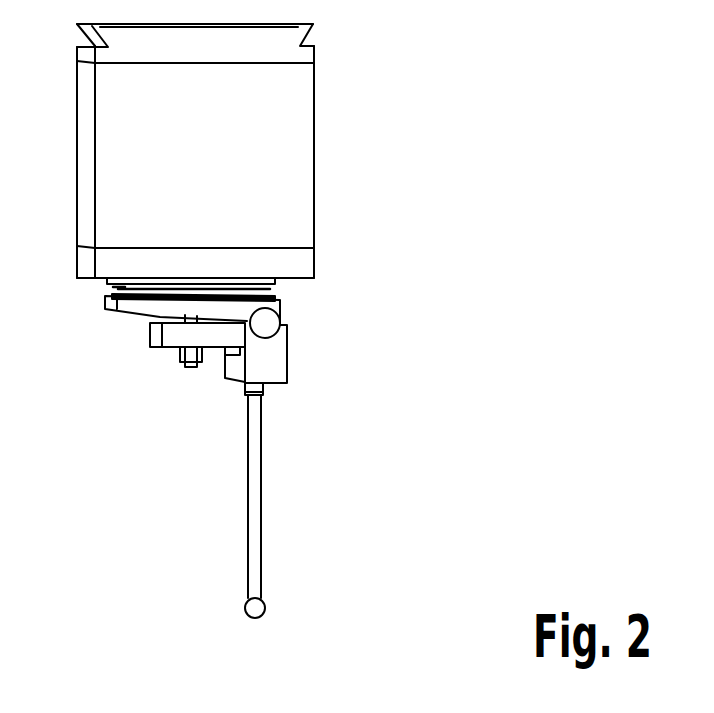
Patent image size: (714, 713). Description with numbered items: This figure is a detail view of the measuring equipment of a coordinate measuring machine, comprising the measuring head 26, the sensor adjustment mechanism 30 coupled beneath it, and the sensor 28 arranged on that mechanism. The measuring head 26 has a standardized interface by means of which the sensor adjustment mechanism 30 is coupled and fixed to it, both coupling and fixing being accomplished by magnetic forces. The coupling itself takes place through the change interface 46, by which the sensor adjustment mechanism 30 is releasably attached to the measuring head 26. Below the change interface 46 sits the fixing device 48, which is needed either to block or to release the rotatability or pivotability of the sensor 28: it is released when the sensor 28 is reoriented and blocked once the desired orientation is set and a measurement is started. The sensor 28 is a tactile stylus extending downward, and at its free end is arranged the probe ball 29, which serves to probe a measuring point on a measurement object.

The measuring head 26 is at (297, 163).
The sensor 28 is at (255, 512).
The probe ball 29 is at (262, 605).
The sensor adjustment mechanism 30 is at (337, 321).
The change interface 46 is at (122, 288).
The fixing device 48 is at (148, 321).